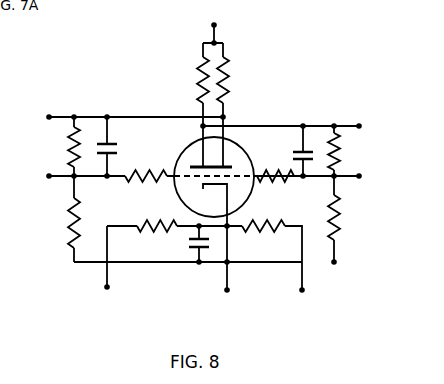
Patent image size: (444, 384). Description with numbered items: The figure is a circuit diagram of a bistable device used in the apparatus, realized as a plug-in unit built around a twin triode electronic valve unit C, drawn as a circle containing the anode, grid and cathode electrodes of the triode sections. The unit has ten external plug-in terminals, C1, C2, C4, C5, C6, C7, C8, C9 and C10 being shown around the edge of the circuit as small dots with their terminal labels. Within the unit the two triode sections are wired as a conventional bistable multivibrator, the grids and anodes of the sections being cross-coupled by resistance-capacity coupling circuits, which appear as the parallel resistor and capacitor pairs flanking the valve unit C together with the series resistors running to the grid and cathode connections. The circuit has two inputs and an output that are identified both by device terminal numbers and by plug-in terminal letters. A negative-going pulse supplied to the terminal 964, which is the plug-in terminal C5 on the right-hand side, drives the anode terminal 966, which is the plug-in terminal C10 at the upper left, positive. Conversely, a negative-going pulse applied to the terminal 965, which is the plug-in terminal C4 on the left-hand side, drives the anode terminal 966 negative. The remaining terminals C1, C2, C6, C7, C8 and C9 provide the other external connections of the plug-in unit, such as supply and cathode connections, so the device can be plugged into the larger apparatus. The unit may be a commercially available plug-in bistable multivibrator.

The twin triode electronic valve unit C is at (232, 157).
The external terminal C1 is at (302, 290).
The external terminal C2 is at (214, 24).
The plug-in terminal C4 is at (49, 175).
The plug-in terminal C5 is at (359, 176).
The external terminal C6 is at (226, 290).
The external terminal C7 is at (333, 262).
The external terminal C8 is at (107, 287).
The external terminal C9 is at (359, 126).
The anode terminal C10 is at (49, 117).
The terminal 964 is at (346, 178).
The terminal 965 is at (62, 178).
The anode terminal 966 is at (92, 116).